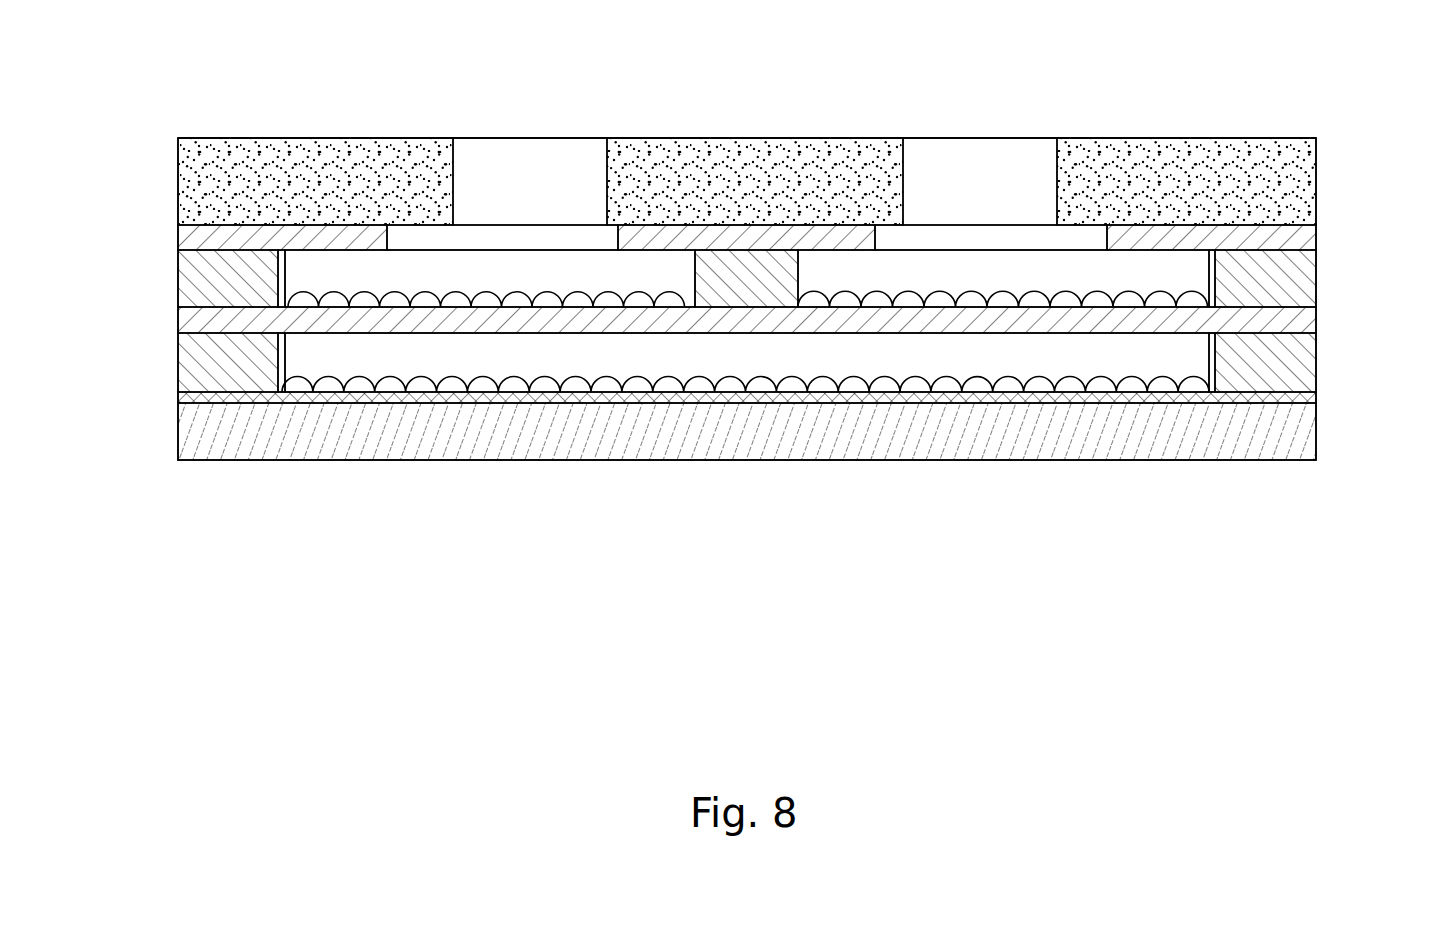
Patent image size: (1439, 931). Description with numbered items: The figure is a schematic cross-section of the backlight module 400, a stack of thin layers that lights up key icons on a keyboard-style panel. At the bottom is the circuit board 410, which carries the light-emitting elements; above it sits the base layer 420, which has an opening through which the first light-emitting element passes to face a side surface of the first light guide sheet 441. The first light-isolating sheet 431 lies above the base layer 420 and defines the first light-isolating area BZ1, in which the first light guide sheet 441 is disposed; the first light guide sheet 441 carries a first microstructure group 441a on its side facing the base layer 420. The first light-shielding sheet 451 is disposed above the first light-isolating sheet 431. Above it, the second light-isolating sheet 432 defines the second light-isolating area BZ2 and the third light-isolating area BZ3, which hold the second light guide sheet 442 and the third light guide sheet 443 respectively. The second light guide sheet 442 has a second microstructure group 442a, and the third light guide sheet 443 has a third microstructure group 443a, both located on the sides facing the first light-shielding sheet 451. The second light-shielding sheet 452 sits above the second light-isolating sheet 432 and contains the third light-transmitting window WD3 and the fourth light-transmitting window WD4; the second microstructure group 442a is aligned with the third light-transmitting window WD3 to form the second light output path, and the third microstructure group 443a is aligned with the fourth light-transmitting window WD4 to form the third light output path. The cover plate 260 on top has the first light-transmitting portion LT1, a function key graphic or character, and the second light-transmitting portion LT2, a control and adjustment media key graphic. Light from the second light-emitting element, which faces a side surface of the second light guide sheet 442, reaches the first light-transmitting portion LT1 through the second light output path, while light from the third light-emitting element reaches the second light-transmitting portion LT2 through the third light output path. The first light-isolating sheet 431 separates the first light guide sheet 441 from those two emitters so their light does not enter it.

The backlight module 400 is at (97, 65).
The cover plate 260 is at (293, 157).
The second light-transmitting portion LT2 is at (560, 158).
The first light-transmitting portion LT1 is at (1020, 158).
The fourth light-transmitting window WD4 is at (512, 232).
The third light-transmitting window WD3 is at (978, 232).
The second light-shielding sheet 452 is at (1300, 240).
The first light-shielding sheet 451 is at (1300, 322).
The second light-isolating sheet 432 is at (1300, 298).
The first light-isolating sheet 431 is at (1300, 358).
The third light guide sheet 443 is at (628, 265).
The third microstructure group 443a is at (662, 298).
The second light guide sheet 442 is at (1138, 265).
The second microstructure group 442a is at (1170, 298).
The first light guide sheet 441 is at (630, 362).
The first microstructure group 441a is at (835, 380).
The base layer 420 is at (738, 398).
The circuit board 410 is at (456, 440).
The first light-isolating area BZ1 is at (258, 355).
The second light-isolating area BZ2 is at (1228, 270).
The third light-isolating area BZ3 is at (258, 270).